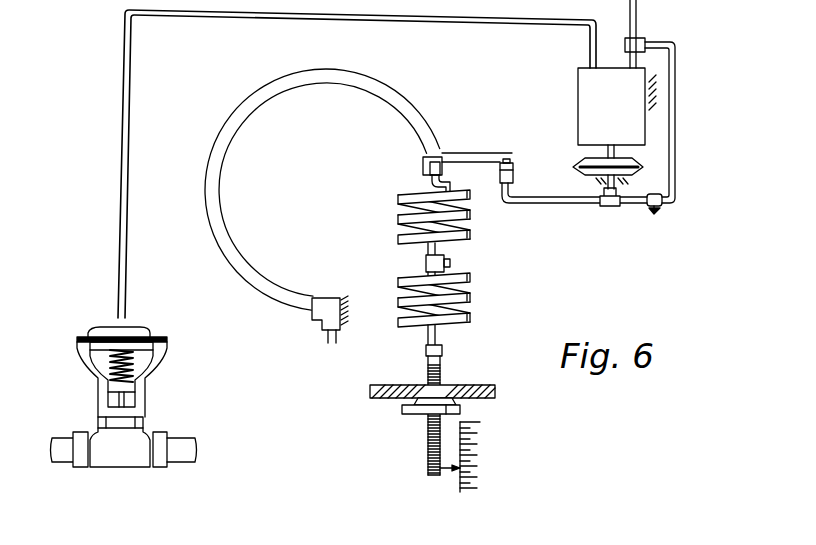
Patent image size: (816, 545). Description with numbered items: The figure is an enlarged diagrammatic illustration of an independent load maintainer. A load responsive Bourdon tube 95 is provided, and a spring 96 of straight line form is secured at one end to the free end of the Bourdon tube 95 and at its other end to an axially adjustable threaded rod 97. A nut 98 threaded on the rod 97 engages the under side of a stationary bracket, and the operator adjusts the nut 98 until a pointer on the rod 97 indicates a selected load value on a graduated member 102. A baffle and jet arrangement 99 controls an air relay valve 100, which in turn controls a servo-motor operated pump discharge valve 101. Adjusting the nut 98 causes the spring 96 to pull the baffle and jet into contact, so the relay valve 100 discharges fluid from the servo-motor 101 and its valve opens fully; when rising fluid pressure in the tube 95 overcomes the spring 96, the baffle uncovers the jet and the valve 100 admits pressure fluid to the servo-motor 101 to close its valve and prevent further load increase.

The load responsive Bourdon tube 95 is at (216, 190).
The spring 96 is at (468, 264).
The axially adjustable threaded rod 97 is at (441, 373).
The nut 98 is at (420, 411).
The baffle and jet arrangement 99 is at (540, 156).
The air relay valve 100 is at (582, 101).
The servo-motor operated pump discharge valve 101 is at (170, 396).
The graduated member 102 is at (484, 454).